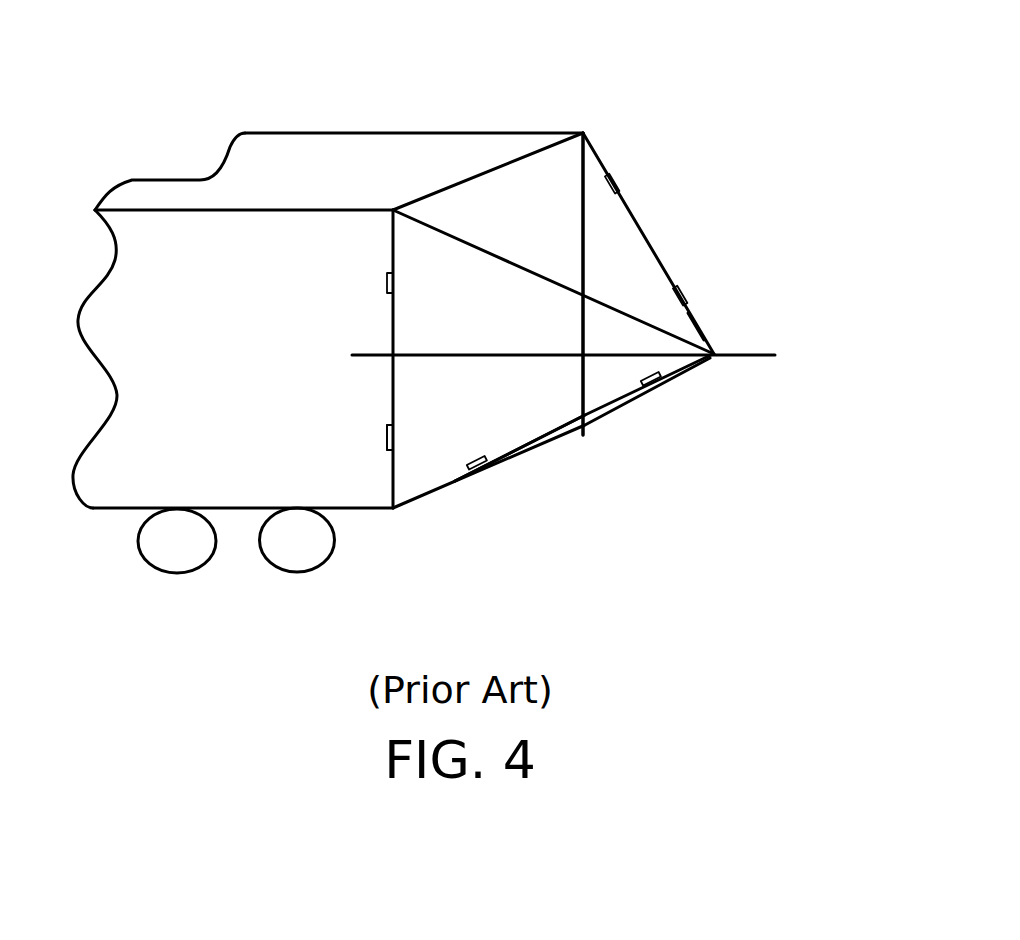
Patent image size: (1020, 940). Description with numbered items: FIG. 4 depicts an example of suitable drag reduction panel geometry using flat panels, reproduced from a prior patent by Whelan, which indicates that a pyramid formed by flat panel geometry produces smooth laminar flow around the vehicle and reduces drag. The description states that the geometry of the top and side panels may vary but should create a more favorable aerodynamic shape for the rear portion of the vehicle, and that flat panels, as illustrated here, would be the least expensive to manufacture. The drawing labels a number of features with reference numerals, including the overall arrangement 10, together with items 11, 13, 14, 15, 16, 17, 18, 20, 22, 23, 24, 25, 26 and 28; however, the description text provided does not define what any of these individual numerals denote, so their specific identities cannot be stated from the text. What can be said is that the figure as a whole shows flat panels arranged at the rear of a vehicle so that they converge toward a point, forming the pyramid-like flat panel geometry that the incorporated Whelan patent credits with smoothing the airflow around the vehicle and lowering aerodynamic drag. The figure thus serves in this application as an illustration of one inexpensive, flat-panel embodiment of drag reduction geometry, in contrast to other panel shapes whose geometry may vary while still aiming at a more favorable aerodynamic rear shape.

The aerodynamic fairing assembly 10 is at (790, 80).
The rear panel 11 is at (517, 264).
The bottom panel 13 is at (556, 437).
The door hinge 14 is at (403, 417).
The side panel edge 15 is at (627, 203).
The lower hinge 16 is at (480, 470).
The diagonal strut 17 is at (600, 302).
The rear door 18 is at (390, 250).
The trailer 20 is at (333, 167).
The center axis line 22 is at (747, 357).
The hinge 23 is at (664, 381).
The side panel 24 is at (500, 410).
The hinge 25 is at (692, 315).
The top panel 26 is at (535, 195).
The top panel edge 28 is at (458, 178).